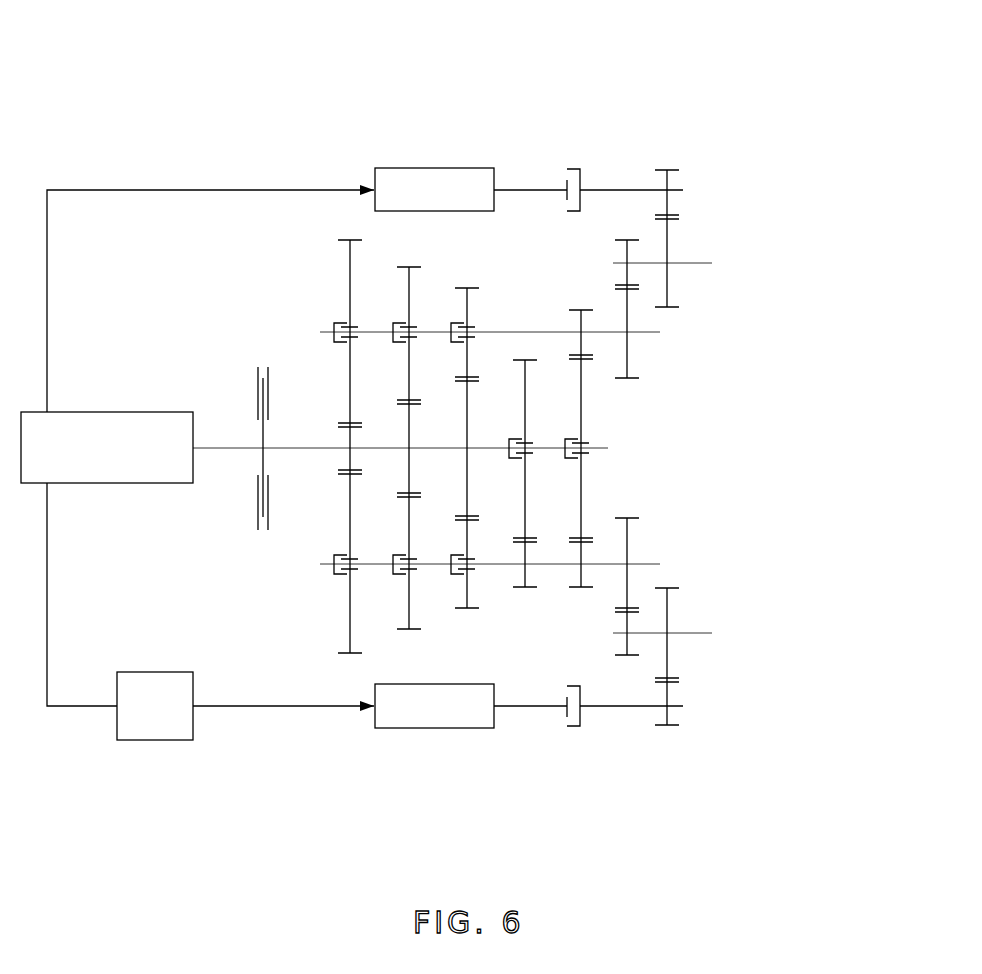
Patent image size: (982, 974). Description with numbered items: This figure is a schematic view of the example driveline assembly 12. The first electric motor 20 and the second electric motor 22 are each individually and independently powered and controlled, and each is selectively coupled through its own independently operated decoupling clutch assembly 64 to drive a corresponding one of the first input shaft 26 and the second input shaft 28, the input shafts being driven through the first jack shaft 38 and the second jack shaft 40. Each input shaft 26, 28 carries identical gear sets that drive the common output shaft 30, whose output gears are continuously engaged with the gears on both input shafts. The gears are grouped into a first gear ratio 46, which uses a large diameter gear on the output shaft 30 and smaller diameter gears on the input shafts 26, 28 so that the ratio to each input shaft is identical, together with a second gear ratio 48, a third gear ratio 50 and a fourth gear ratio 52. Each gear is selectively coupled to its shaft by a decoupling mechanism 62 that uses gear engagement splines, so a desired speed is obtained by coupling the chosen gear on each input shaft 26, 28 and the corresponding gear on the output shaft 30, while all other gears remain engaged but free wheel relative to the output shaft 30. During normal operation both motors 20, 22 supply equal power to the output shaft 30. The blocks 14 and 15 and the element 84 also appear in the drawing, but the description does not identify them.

The driveline assembly 12 is at (719, 131).
The engine 14 is at (122, 462).
The motor/controller box 15 is at (172, 720).
The first electric motor 20 is at (447, 203).
The second electric motor 22 is at (452, 722).
The first input shaft 26 is at (643, 333).
The second input shaft 28 is at (648, 562).
The output shaft 30 is at (225, 450).
The first jack shaft 38 is at (693, 260).
The second jack shaft 40 is at (702, 633).
The first gear ratio 46 is at (602, 309).
The second gear ratio 48 is at (468, 307).
The third gear ratio 50 is at (406, 287).
The fourth gear ratio 52 is at (348, 263).
The decoupling mechanism 62 is at (437, 318).
The decoupling clutch assembly 64 is at (575, 167).
The electric machine rotor 84 is at (253, 393).